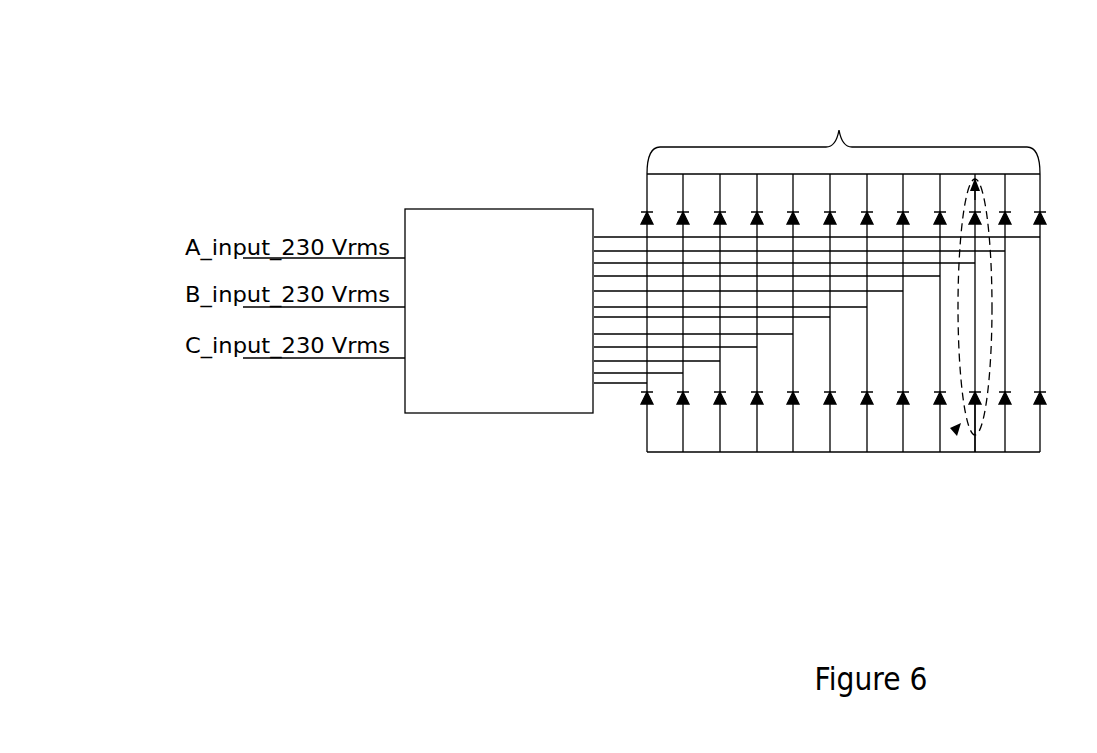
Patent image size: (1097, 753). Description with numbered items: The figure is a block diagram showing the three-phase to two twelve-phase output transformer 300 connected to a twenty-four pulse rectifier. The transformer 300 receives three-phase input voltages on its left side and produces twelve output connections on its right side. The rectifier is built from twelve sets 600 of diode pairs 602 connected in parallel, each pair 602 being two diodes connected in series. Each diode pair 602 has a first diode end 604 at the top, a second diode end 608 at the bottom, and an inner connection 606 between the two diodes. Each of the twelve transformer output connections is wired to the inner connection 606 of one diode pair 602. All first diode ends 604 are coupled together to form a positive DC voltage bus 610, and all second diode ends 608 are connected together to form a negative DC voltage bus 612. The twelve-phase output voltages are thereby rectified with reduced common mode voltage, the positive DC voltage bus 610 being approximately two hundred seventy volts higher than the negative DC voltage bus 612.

The three-phase to two twelve-phase output transformer 300 is at (548, 191).
The sets of diode pairs 600 is at (841, 316).
The diode pair 602 is at (958, 430).
The first diode end 604 is at (979, 183).
The inner connection 606 is at (968, 265).
The second diode end 608 is at (973, 453).
The positive DC voltage bus 610 is at (1032, 172).
The negative DC voltage bus 612 is at (1028, 455).